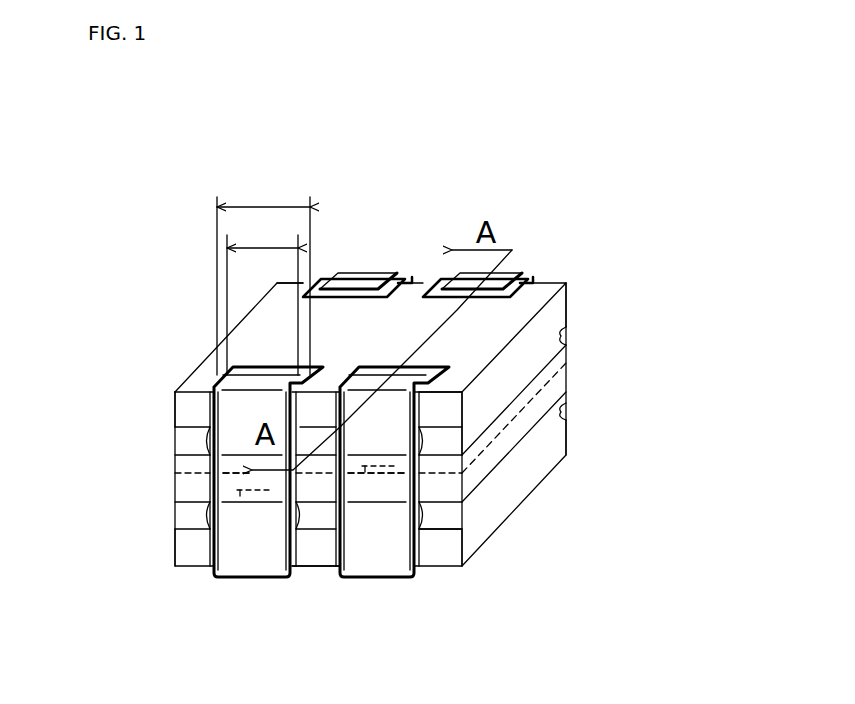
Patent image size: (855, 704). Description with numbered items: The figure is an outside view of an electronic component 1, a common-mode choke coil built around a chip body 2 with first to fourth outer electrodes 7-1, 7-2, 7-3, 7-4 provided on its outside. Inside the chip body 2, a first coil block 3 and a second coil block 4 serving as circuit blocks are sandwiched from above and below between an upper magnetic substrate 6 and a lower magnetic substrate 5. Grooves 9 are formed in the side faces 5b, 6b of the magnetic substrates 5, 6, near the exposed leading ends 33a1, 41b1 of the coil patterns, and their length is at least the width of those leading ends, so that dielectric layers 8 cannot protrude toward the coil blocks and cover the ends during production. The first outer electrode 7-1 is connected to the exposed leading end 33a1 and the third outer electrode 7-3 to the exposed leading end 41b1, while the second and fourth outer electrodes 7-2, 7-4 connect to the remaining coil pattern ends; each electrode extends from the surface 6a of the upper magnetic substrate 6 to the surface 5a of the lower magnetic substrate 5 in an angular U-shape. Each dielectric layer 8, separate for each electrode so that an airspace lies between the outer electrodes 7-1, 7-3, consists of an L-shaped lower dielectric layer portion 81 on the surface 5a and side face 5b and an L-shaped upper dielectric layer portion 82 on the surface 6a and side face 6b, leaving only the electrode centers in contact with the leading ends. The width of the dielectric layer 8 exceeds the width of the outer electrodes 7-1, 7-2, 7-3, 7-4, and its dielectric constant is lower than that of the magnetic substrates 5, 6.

The electronic component 1 is at (466, 196).
The chip body 2 is at (678, 273).
The first coil block 3 is at (555, 393).
The second coil block 4 is at (557, 367).
The magnetic substrate 5 is at (555, 447).
The surface 5a is at (317, 566).
The side face 5b is at (190, 552).
The magnetic substrate 6 is at (567, 303).
The surface 6a is at (540, 283).
The side face 6b is at (187, 412).
The first outer electrode 7-1 is at (217, 577).
The second outer electrode 7-2 is at (318, 286).
The third outer electrode 7-3 is at (403, 577).
The fourth outer electrode 7-4 is at (524, 298).
The dielectric layer 8 is at (440, 280).
The lower dielectric layer portion 81 is at (426, 540).
The upper dielectric layer portion 82 is at (462, 425).
The groove 9 is at (566, 331).
The exposed leading end 33a1 is at (242, 500).
The exposed leading end 41b1 is at (368, 477).